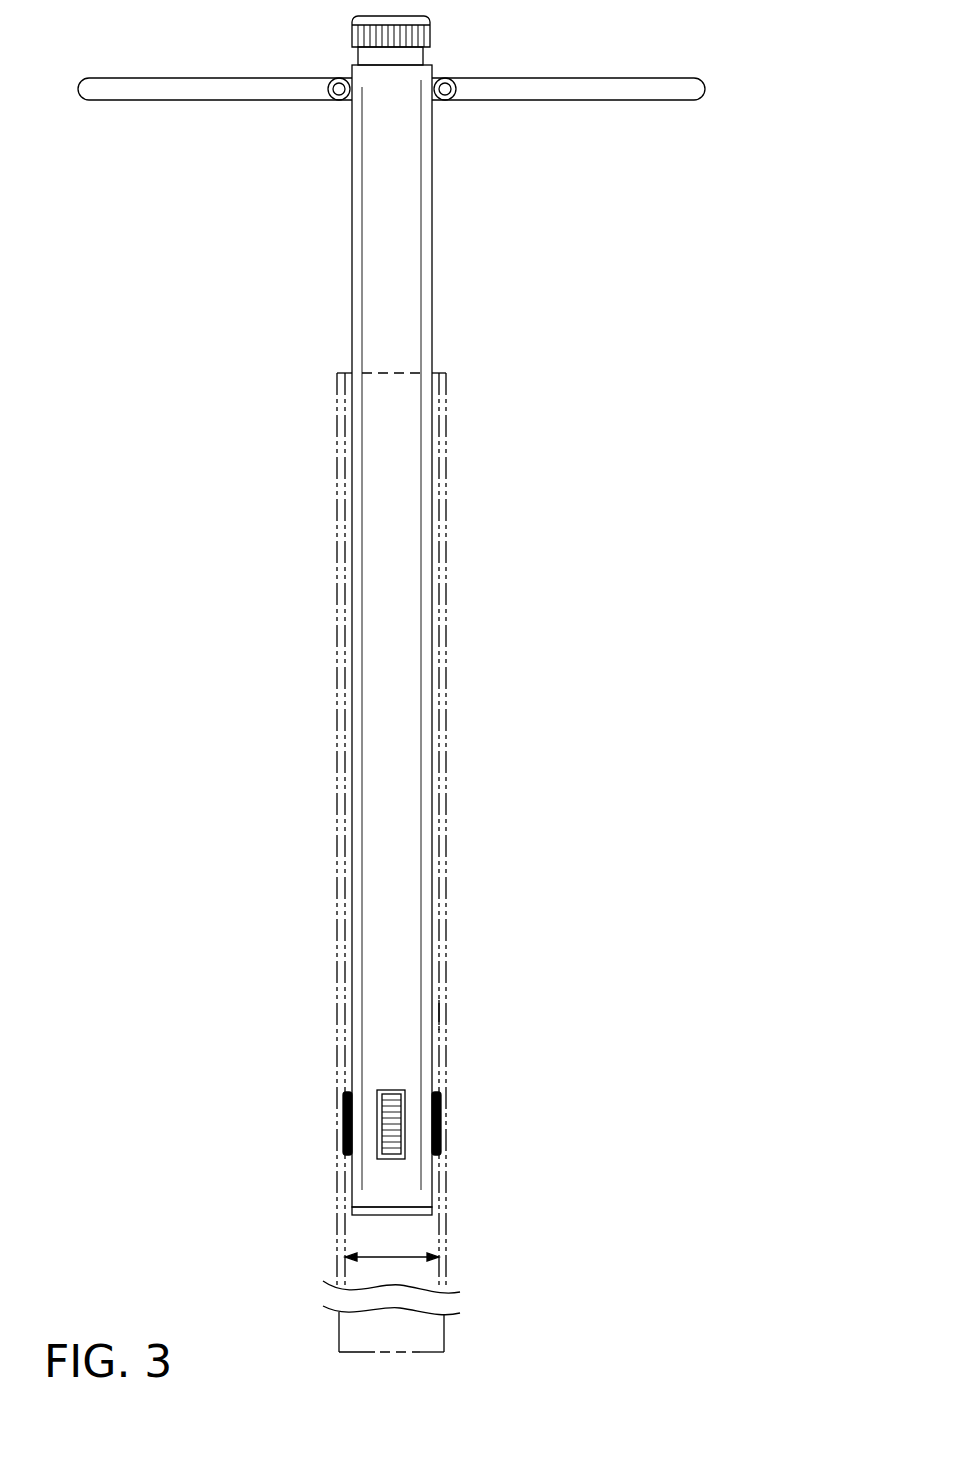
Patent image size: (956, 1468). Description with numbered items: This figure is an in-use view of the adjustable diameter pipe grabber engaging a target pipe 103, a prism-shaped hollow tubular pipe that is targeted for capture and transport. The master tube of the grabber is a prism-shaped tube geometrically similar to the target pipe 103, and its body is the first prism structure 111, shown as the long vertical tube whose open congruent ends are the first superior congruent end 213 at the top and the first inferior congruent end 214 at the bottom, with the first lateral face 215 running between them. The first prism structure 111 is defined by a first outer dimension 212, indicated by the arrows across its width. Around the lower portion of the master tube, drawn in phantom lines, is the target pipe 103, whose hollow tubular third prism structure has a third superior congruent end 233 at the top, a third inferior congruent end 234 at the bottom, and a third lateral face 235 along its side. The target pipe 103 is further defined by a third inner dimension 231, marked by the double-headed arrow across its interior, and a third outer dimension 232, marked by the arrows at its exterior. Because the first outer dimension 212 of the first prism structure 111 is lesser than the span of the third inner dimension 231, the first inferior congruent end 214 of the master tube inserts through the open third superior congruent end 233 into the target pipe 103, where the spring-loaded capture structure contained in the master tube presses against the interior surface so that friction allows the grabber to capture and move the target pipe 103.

The first superior congruent end 213 is at (357, 57).
The first prism structure 111 is at (377, 266).
The third superior congruent end 233 is at (442, 373).
The first outer dimension 212 is at (303, 566).
The first lateral face 215 is at (387, 685).
The third outer dimension 232 is at (289, 786).
The third lateral face 235 is at (438, 1024).
The first inferior congruent end 214 is at (397, 1217).
The third inner dimension 231 is at (387, 1258).
The target pipe 103 is at (443, 1272).
The third inferior congruent end 234 is at (418, 1352).